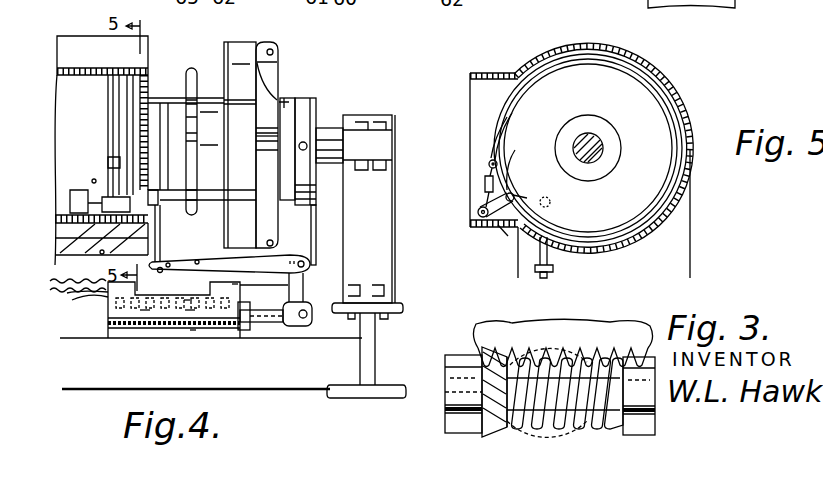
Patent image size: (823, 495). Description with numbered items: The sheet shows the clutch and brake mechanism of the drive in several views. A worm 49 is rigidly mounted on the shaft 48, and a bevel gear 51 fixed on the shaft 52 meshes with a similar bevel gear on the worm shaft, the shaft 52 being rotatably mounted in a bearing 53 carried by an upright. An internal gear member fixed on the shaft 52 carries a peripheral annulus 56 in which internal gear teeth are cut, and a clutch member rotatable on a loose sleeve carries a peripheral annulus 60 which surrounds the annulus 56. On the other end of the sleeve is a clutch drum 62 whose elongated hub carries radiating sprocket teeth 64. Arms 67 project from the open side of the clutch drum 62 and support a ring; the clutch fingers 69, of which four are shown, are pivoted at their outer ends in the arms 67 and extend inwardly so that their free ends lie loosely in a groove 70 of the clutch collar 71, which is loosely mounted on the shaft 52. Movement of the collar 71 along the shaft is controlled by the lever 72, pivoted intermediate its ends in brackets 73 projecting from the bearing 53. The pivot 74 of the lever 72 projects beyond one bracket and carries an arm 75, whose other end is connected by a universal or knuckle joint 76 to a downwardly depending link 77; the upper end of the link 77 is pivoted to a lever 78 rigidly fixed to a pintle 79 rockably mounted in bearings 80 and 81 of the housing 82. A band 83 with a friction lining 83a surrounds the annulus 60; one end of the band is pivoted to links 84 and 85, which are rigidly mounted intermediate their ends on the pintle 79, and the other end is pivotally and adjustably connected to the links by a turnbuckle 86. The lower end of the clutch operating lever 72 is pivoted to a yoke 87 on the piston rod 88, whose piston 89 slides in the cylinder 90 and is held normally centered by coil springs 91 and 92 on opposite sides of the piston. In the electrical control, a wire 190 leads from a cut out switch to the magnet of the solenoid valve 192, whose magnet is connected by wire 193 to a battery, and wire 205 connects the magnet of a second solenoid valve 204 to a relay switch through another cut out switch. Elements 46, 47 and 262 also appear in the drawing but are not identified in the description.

In FIG. 3, the shaft section 46 is at (455, 425).
In FIG. 3, the shaft section 47 is at (636, 426).
In FIG. 3, the shaft 48 is at (462, 382).
In FIG. 3, the worm 49 is at (548, 428).
In FIG. 3, the bevel gear 51 is at (545, 433).
In FIG. 4, the shaft 52 is at (330, 128).
In FIG. 5, the shaft 52 is at (597, 148).
In FIG. 3, the shaft 52 is at (550, 366).
In FIG. 4, the bearing 53 is at (390, 187).
In FIG. 3, the peripheral annulus 56 is at (500, 437).
In FIG. 4, the peripheral annulus 60 is at (104, 99).
In FIG. 5, the peripheral annulus 60 is at (664, 113).
In FIG. 4, the clutch drum 62 is at (232, 52).
In FIG. 4, the sprocket teeth 64 is at (192, 91).
In FIG. 4, the arms 67 is at (274, 46).
In FIG. 4, the clutch fingers 69 is at (272, 68).
In FIG. 4, the groove 70 is at (283, 103).
In FIG. 4, the clutch collar 71 is at (286, 114).
In FIG. 4, the lever 72 is at (306, 235).
In FIG. 4, the brackets 73 is at (325, 262).
In FIG. 4, the pivot 74 is at (311, 264).
In FIG. 4, the arm 75 is at (275, 270).
In FIG. 4, the universal or knuckle joint 76 is at (168, 263).
In FIG. 5, the universal or knuckle joint 76 is at (553, 275).
In FIG. 4, the link 77 is at (166, 222).
In FIG. 5, the link 77 is at (553, 259).
In FIG. 4, the lever 78 is at (155, 187).
In FIG. 5, the lever 78 is at (536, 196).
In FIG. 4, the pintle 79 is at (92, 178).
In FIG. 5, the pintle 79 is at (511, 190).
In FIG. 4, the bearing 80 is at (72, 192).
In FIG. 4, the bearing 81 is at (116, 143).
In FIG. 4, the housing 82 is at (92, 57).
In FIG. 5, the housing 82 is at (471, 74).
In FIG. 4, the band 83 is at (122, 96).
In FIG. 5, the band 83 is at (668, 92).
In FIG. 5, the friction lining 83a is at (645, 79).
In FIG. 4, the link 84 is at (72, 227).
In FIG. 5, the link 84 is at (498, 225).
In FIG. 4, the link 85 is at (100, 255).
In FIG. 5, the link 85 is at (480, 207).
In FIG. 4, the turnbuckle 86 is at (113, 153).
In FIG. 5, the turnbuckle 86 is at (484, 183).
In FIG. 4, the yoke 87 is at (311, 320).
In FIG. 4, the piston rod 88 is at (277, 325).
In FIG. 4, the piston 89 is at (188, 320).
In FIG. 4, the cylinder 90 is at (108, 302).
In FIG. 4, the coil spring 91 is at (147, 320).
In FIG. 4, the coil spring 92 is at (188, 322).
In FIG. 4, the wire 190 is at (197, 260).
In FIG. 4, the solenoid valve 192 is at (238, 286).
In FIG. 4, the wire 193 is at (202, 351).
In FIG. 4, the solenoid valve 204 is at (72, 300).
In FIG. 4, the wire 205 is at (62, 281).
In FIG. 4, the rod 262 is at (67, 293).